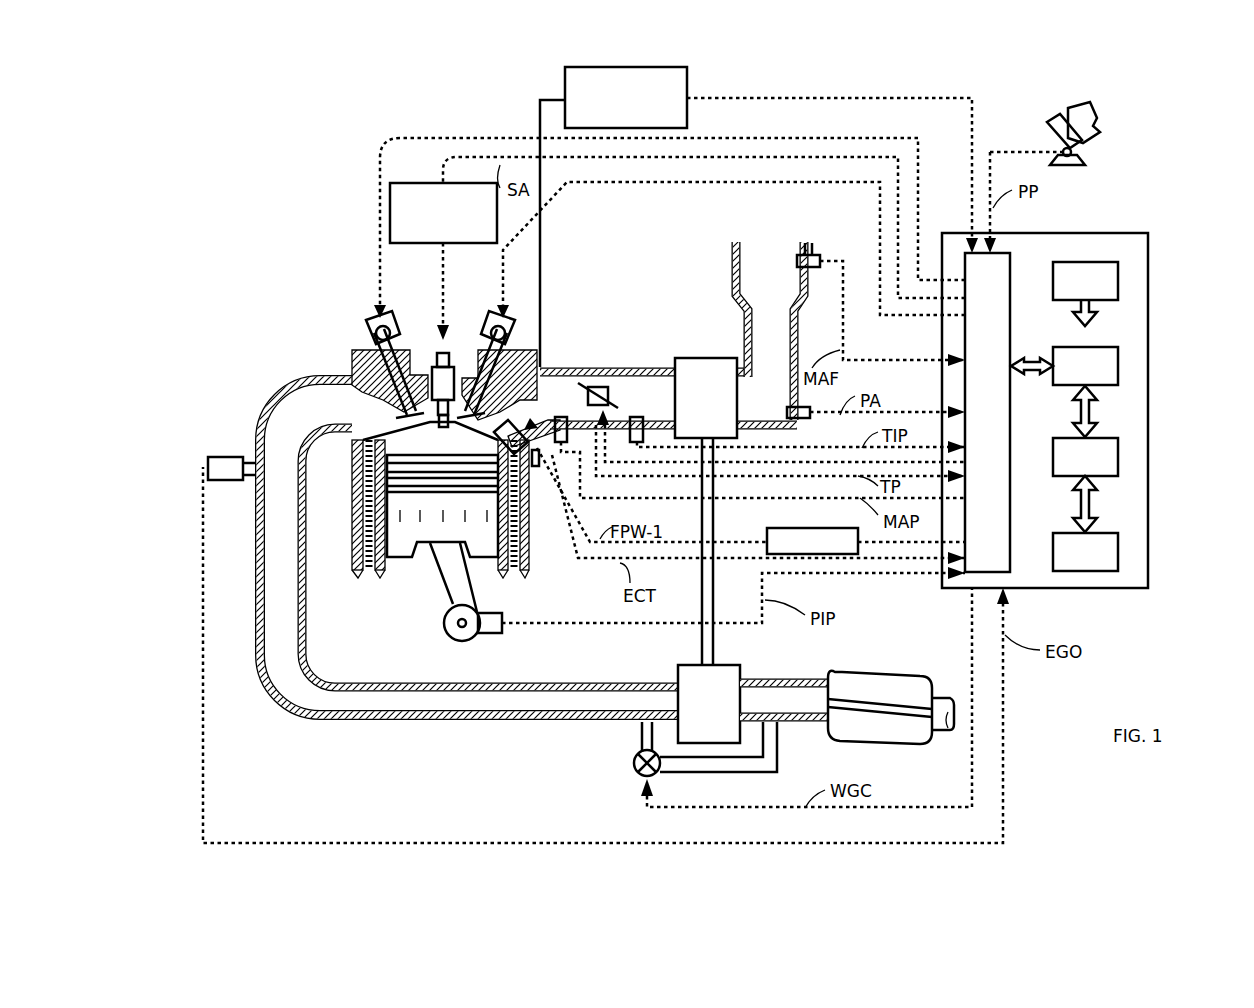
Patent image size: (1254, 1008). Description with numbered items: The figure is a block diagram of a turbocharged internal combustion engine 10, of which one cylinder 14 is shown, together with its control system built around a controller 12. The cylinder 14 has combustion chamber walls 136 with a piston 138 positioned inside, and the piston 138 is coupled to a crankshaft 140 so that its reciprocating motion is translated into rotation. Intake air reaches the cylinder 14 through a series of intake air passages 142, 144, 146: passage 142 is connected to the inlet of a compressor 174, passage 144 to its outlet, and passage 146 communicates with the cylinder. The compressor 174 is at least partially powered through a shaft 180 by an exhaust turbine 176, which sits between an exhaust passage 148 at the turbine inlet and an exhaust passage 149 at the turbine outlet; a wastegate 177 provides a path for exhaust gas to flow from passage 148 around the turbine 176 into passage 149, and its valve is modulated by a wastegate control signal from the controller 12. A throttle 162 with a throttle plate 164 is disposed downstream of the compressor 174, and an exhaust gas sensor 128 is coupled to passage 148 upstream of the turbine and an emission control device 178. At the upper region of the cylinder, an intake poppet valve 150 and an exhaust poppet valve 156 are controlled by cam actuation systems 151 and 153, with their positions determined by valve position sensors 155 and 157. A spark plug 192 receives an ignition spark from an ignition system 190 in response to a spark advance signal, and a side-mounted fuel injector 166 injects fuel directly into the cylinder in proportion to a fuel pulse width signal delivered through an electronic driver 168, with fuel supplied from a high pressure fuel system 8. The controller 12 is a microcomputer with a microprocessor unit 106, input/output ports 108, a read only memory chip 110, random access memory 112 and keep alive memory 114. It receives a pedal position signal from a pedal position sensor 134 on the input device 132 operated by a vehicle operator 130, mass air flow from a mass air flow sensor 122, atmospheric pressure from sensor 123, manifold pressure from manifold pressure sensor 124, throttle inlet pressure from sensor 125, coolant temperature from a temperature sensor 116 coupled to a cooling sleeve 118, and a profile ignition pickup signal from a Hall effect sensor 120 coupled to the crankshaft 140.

The high pressure fuel system 8 is at (688, 78).
The internal combustion engine 10 is at (247, 256).
The controller 12 is at (1148, 235).
The cylinder 14 is at (355, 460).
The microprocessor unit 106 is at (1118, 362).
The input/output ports 108 is at (1010, 266).
The read only memory chip 110 is at (1118, 278).
The random access memory 112 is at (1118, 452).
The keep alive memory 114 is at (1118, 548).
The temperature sensor 116 is at (538, 468).
The cooling sleeve 118 is at (531, 470).
The Hall effect sensor 120 is at (500, 635).
The mass air flow sensor 122 is at (815, 248).
The sensor 123 is at (800, 418).
The manifold pressure sensor 124 is at (565, 445).
The sensor 125 is at (640, 445).
The exhaust gas sensor 128 is at (208, 458).
The vehicle operator 130 is at (1098, 116).
The input device 132 is at (1048, 130).
The pedal position sensor 134 is at (1075, 151).
The combustion chamber walls 136 is at (388, 572).
The piston 138 is at (428, 530).
The crankshaft 140 is at (452, 640).
The intake air passage 142 is at (788, 288).
The intake air passage 144 is at (667, 408).
The intake air passage 146 is at (573, 408).
The exhaust passage 148 is at (342, 414).
The exhaust passage 149 is at (808, 709).
The intake poppet valve 150 is at (476, 362).
The cam actuation system 151 is at (492, 325).
The cam actuation system 153 is at (390, 325).
The valve position sensor 155 is at (543, 322).
The exhaust poppet valve 156 is at (366, 383).
The valve position sensor 157 is at (365, 336).
The throttle 162 is at (600, 383).
The throttle plate 164 is at (575, 382).
The fuel injector 166 is at (729, 473).
The electronic driver 168 is at (768, 530).
The compressor 174 is at (693, 358).
The exhaust turbine 176 is at (678, 670).
The wastegate 177 is at (636, 775).
The emission control device 178 is at (875, 672).
The shaft 180 is at (715, 640).
The ignition system 190 is at (400, 183).
The spark plug 192 is at (434, 372).